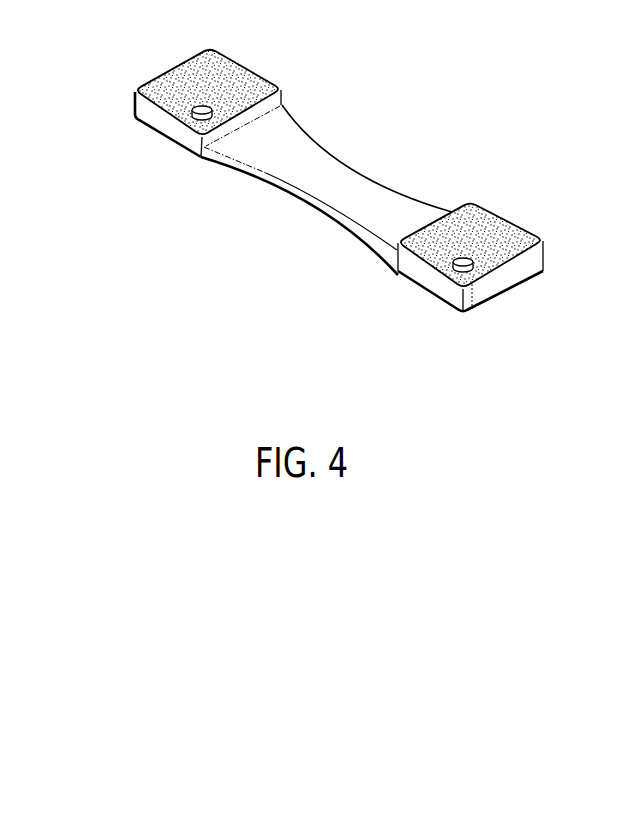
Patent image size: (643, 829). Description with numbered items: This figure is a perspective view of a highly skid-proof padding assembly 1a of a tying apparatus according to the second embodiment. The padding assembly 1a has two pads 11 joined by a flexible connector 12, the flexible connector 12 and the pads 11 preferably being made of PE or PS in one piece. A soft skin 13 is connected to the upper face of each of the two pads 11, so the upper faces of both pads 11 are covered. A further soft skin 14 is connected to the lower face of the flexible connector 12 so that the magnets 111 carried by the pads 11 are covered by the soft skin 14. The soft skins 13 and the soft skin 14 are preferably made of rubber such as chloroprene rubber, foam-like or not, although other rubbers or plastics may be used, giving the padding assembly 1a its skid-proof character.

The padding assembly 1a is at (351, 182).
The pad 11 is at (351, 182).
The magnet 111 is at (193, 113).
The flexible connector 12 is at (313, 195).
The soft skin 13 is at (203, 62).
The soft skin 14 is at (333, 212).